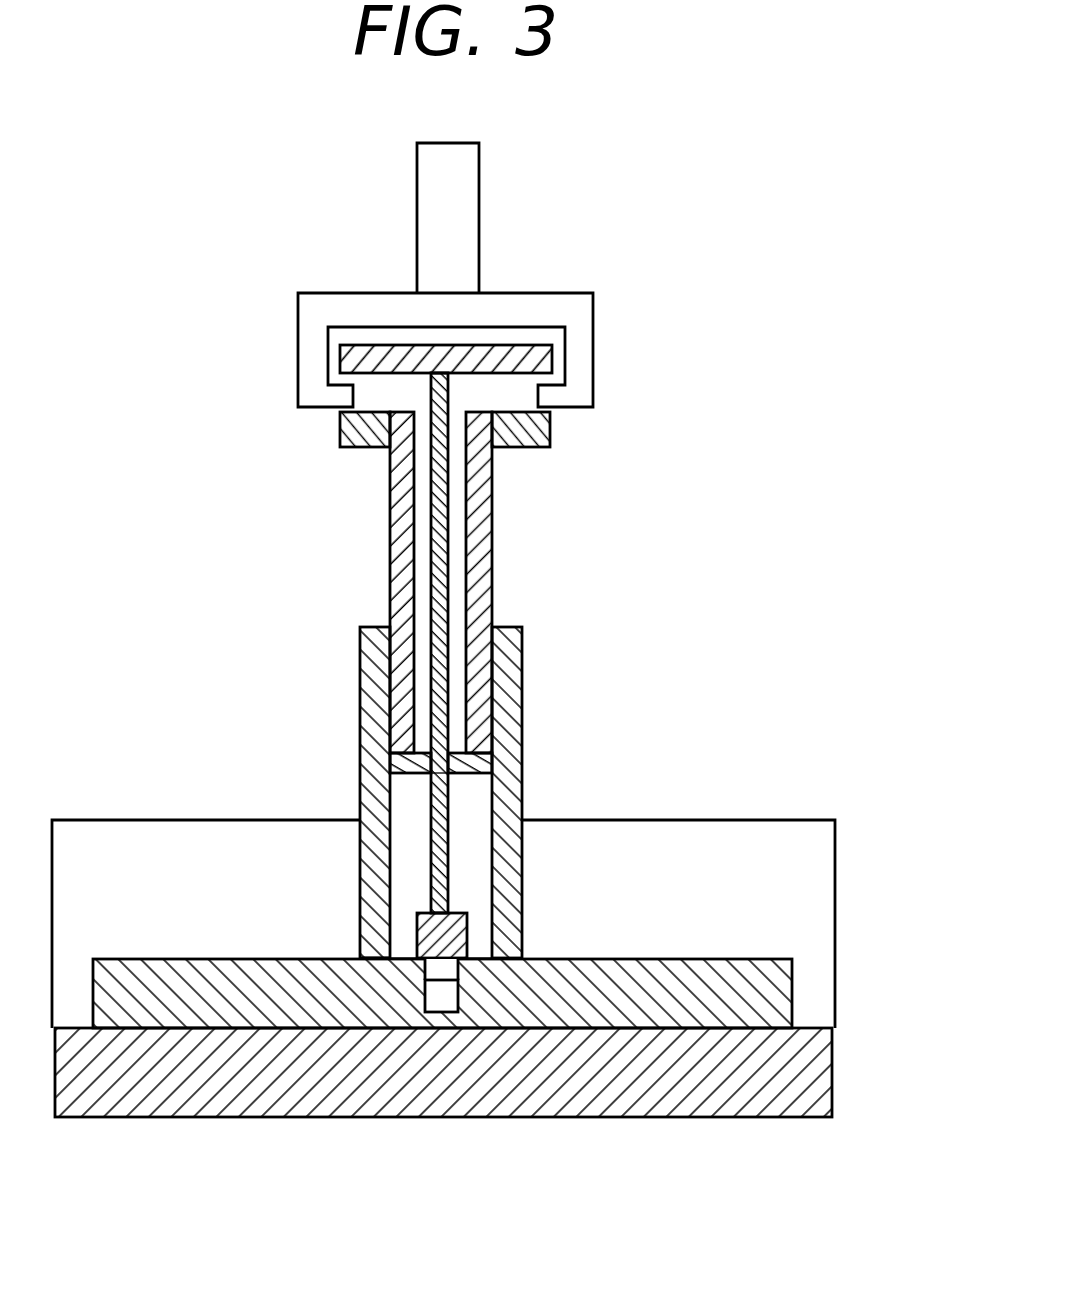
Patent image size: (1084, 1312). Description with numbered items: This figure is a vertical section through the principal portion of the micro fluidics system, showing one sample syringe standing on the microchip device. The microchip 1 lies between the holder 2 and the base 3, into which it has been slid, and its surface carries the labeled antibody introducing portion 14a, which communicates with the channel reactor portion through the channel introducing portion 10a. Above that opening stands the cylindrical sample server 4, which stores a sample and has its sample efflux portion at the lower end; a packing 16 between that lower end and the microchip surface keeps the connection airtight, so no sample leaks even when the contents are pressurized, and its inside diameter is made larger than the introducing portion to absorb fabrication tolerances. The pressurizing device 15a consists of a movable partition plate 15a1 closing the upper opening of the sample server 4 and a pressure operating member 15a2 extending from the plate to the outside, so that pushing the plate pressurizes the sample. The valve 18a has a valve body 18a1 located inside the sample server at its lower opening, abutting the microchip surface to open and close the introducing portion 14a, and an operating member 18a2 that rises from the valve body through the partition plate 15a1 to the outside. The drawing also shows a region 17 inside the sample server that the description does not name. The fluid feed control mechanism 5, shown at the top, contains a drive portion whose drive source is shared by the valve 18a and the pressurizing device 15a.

The microchip 1 is at (782, 990).
The holder 2 is at (820, 862).
The base 3 is at (820, 1078).
The sample server 4 is at (522, 656).
The fluid feed control mechanism 5 is at (593, 320).
The channel introducing portion 10a is at (440, 1000).
The labeled antibody introducing portion 14a is at (440, 968).
The pressurizing device 15a is at (441, 592).
The partition plate 15a1 is at (480, 762).
The pressure operating member 15a2 is at (492, 540).
The packing 16 is at (375, 948).
The cavity 17 is at (403, 790).
The valve 18a is at (430, 860).
The valve body 18a1 is at (458, 930).
The operating member 18a2 is at (448, 485).